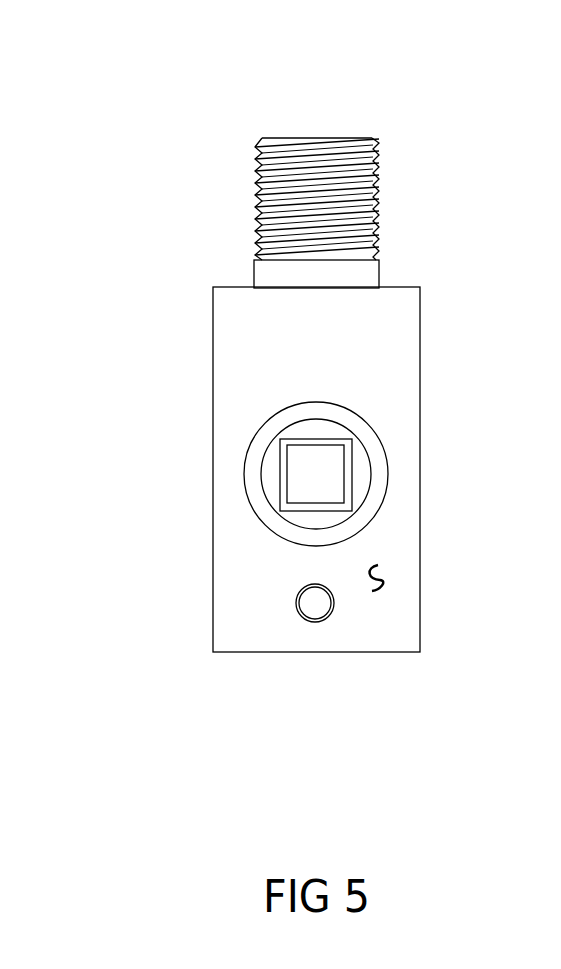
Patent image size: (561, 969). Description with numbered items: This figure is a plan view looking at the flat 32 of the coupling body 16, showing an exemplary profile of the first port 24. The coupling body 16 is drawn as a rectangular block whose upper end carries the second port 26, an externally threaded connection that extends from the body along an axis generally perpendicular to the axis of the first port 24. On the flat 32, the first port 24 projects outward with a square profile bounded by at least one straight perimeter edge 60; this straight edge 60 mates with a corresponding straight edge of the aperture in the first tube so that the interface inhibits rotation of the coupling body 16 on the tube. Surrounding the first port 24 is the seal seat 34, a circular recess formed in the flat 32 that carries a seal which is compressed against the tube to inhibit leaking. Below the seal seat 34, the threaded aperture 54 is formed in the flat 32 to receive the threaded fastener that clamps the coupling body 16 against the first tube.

The coupling body 16 is at (213, 344).
The second port 26 is at (315, 137).
The seal seat 34 is at (350, 422).
The straight perimeter edge 60 is at (280, 475).
The first port 24 is at (316, 473).
The flat 32 is at (380, 580).
The threaded aperture 54 is at (322, 621).